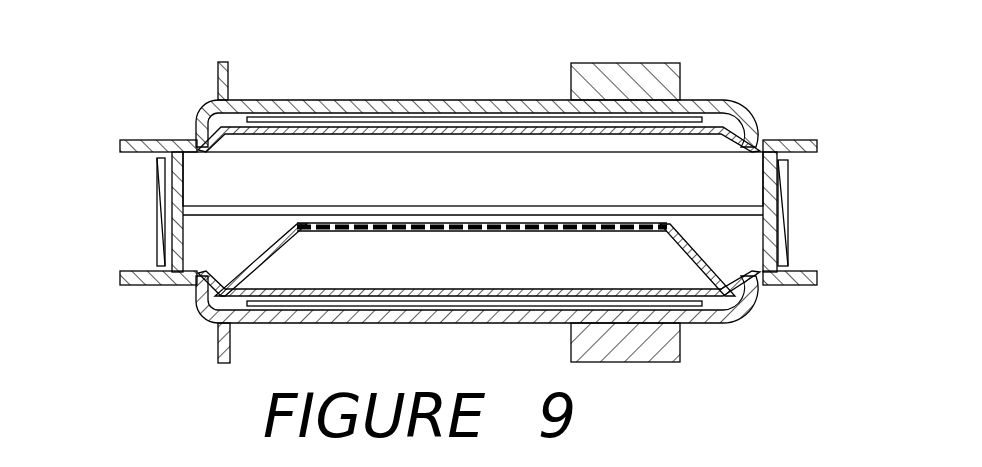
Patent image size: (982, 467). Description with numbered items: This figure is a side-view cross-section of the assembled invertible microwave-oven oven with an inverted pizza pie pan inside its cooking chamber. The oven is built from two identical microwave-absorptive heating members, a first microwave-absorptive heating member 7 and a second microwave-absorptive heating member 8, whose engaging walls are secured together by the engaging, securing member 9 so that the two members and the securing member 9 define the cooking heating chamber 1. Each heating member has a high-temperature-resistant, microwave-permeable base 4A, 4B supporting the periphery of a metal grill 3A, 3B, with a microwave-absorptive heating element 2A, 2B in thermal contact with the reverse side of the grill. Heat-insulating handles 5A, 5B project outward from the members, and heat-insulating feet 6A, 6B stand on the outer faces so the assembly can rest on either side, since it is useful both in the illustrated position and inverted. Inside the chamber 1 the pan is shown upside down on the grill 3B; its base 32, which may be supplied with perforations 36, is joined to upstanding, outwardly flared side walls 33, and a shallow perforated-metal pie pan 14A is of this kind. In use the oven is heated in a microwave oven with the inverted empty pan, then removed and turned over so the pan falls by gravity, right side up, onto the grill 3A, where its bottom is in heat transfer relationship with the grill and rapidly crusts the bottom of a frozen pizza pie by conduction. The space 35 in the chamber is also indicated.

The cooking heating chamber 1 is at (540, 159).
The microwave-absorptive heating element 2A is at (575, 79).
The microwave-absorptive heating element 2B is at (575, 336).
The metal grill 3A is at (551, 123).
The metal grill 3B is at (474, 328).
The microwave-permeable base 4A is at (401, 92).
The microwave-permeable base 4B is at (401, 299).
The heat-insulating handle 5A is at (431, 109).
The heat-insulating handle 5B is at (431, 259).
The heat-insulating foot 6A is at (136, 53).
The heat-insulating foot 6B is at (135, 341).
The first microwave-absorptive heating member 7 is at (831, 88).
The second microwave-absorptive heating member 8 is at (830, 323).
The engaging, securing member 9 is at (472, 204).
The shallow, perforated-metal pie pan 14A is at (146, 200).
The base 32 is at (599, 232).
The upstanding side walls 33 is at (390, 248).
The gap 35 is at (714, 261).
The perforations 36 is at (542, 203).